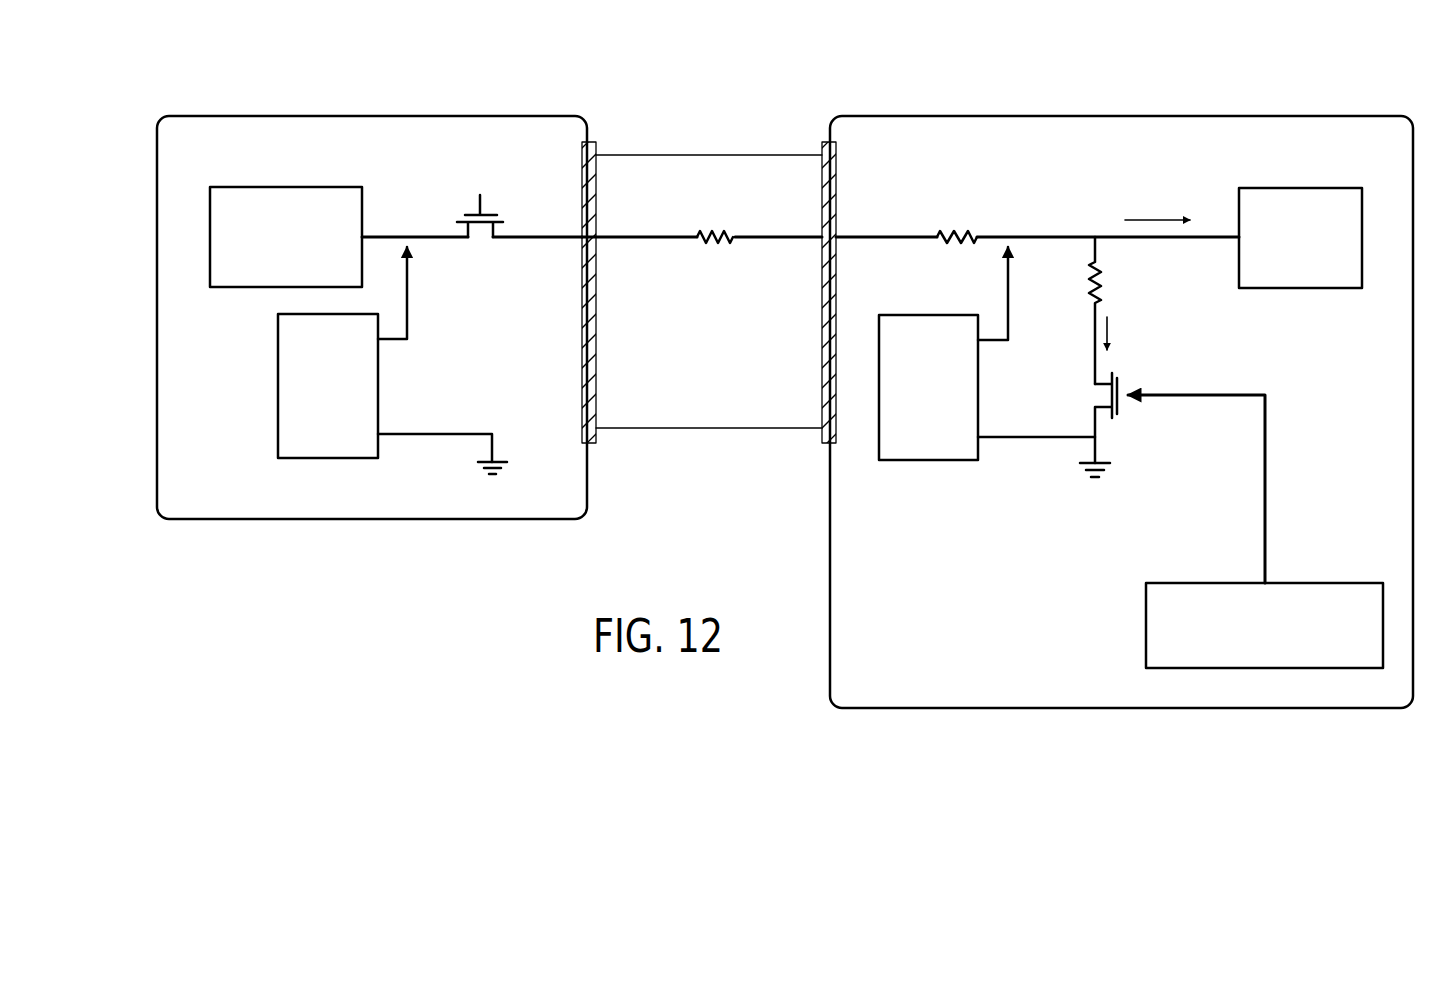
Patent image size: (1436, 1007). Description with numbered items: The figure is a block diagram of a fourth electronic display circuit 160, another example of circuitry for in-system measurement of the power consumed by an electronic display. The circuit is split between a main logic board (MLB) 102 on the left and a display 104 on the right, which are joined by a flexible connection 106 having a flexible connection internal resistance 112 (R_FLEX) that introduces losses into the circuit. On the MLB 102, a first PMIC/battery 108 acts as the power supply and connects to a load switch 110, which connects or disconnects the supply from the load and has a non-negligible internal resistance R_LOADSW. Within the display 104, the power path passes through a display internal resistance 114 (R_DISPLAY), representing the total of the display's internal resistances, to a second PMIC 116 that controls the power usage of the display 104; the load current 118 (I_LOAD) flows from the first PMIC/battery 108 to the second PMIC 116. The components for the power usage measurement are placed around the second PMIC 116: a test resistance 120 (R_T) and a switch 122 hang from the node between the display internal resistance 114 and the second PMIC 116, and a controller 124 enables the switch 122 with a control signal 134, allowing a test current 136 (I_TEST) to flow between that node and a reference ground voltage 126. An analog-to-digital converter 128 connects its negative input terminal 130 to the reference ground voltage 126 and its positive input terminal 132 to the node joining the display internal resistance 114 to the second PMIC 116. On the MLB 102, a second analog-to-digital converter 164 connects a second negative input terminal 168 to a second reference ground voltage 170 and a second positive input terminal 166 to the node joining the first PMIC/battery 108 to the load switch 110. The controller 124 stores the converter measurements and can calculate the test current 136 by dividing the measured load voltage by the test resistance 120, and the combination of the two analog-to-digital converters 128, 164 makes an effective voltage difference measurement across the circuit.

The fourth electronic display circuit 160 is at (280, 72).
The main logic board (MLB) 102 is at (373, 116).
The display 104 is at (1085, 116).
The flexible connection 106 is at (707, 428).
The first PMIC/battery 108 is at (287, 187).
The load switch 110 is at (472, 215).
The flexible connection internal resistance 112 is at (727, 243).
The display internal resistance 114 is at (967, 245).
The second PMIC 116 is at (1300, 188).
The load current 118 is at (1155, 173).
The test resistance 120 is at (1088, 300).
The switch 122 is at (1126, 384).
The controller 124 is at (1146, 630).
The reference ground voltage 126 is at (1095, 478).
The analog-to-digital converter 128 is at (978, 403).
The negative input terminal 130 is at (938, 440).
The positive input terminal 132 is at (953, 352).
The control signal 134 is at (1267, 435).
The test current 136 is at (1150, 330).
The second analog-to-digital converter 164 is at (278, 385).
The second positive input terminal 166 is at (353, 357).
The second negative input terminal 168 is at (353, 420).
The second reference ground voltage 170 is at (492, 473).